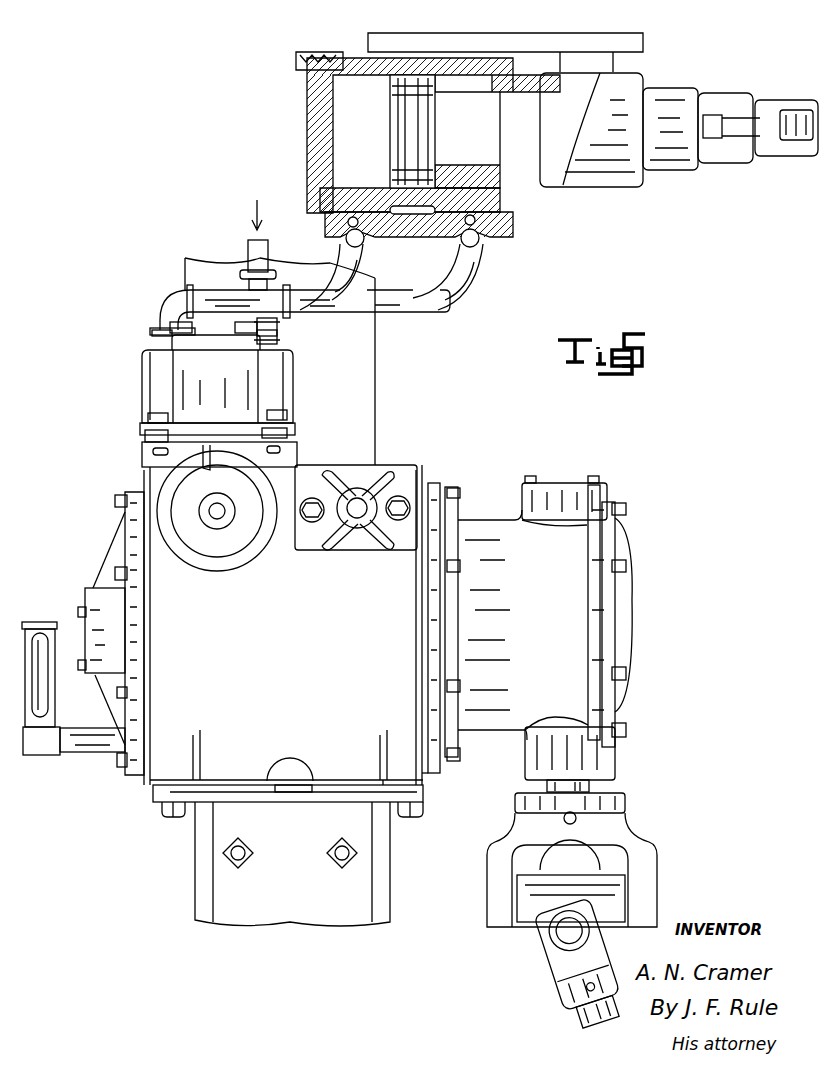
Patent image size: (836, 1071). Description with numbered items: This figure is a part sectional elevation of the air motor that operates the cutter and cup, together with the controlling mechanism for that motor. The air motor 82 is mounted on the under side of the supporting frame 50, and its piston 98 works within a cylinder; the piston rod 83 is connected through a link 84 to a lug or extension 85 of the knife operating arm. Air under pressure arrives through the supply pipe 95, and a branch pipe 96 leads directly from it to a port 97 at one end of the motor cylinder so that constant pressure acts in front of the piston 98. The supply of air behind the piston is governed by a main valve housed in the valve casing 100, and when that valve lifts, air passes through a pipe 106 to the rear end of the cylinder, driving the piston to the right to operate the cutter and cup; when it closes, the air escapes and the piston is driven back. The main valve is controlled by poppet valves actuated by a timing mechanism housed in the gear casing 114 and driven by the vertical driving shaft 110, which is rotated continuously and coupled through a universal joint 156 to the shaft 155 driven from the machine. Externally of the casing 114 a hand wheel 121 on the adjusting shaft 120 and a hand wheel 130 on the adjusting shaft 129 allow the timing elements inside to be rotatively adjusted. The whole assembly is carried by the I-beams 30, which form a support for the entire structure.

The supporting frame 50 is at (582, 40).
The port 97 is at (497, 208).
The piston 98 is at (392, 105).
The air motor 82 is at (590, 187).
The piston rod 83 is at (680, 170).
The link 84 is at (760, 132).
The lug or extension 85 is at (795, 118).
The branch pipe 96 is at (470, 262).
The pipe 106 is at (178, 297).
The pipe 95 is at (250, 245).
The I-beams 30 is at (360, 346).
The valve casing 100 is at (250, 381).
The hand wheel 130 is at (217, 572).
The adjusting shaft 129 is at (217, 515).
The hand wheel 121 is at (385, 478).
The adjusting shaft 120 is at (357, 520).
The gear casing 114 is at (160, 598).
The driving shaft 110 is at (590, 784).
The universal joint 156 is at (530, 927).
The shaft 155 is at (575, 1034).